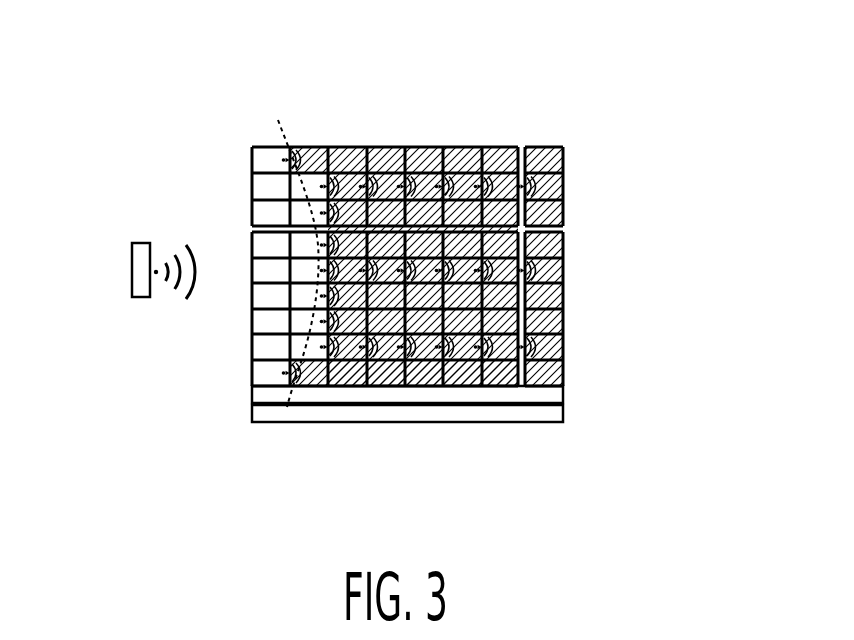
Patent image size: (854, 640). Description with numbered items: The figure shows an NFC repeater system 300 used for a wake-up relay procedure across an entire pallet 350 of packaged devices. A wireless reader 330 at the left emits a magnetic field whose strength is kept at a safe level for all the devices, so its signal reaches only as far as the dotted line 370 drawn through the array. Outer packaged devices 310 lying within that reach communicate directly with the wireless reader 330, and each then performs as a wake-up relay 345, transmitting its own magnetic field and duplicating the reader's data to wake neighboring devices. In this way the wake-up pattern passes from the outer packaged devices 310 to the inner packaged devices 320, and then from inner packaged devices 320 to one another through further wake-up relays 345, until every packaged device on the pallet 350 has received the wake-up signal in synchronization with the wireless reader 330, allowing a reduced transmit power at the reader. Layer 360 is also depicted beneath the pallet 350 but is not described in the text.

The NFC repeater system 300 is at (433, 262).
The outer packaged device 310 is at (264, 162).
The inner packaged device 320 is at (432, 123).
The wireless reader 330 is at (138, 267).
The wake-up relay 345 is at (462, 213).
The pallet 350 is at (262, 393).
The second layer 360 is at (547, 413).
The dotted line 370 is at (283, 412).